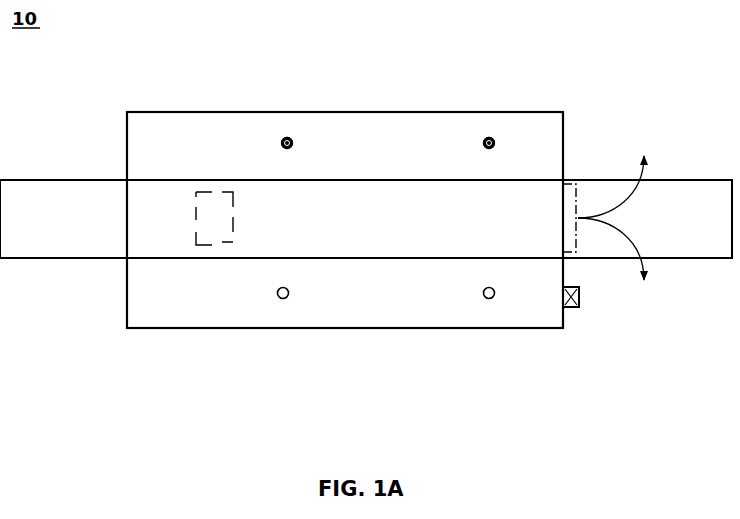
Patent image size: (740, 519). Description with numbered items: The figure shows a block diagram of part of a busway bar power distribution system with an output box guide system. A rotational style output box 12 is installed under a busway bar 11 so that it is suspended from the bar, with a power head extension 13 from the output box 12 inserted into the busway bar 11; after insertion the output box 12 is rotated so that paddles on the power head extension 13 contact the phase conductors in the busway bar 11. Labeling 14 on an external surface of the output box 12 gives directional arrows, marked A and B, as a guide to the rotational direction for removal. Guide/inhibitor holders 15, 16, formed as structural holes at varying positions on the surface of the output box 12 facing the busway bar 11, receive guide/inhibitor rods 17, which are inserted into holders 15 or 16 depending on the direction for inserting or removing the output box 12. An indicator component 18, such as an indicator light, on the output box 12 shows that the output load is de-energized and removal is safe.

The busway bar 11 is at (677, 233).
The output box 12 is at (126, 300).
The power head extension 13 is at (216, 219).
The labeling 14 is at (578, 218).
The guide/inhibitor holder 15 is at (284, 137).
The guide/inhibitor holder 16 is at (280, 301).
The guide/inhibitor rod 17 is at (292, 137).
The indicator component 18 is at (571, 309).